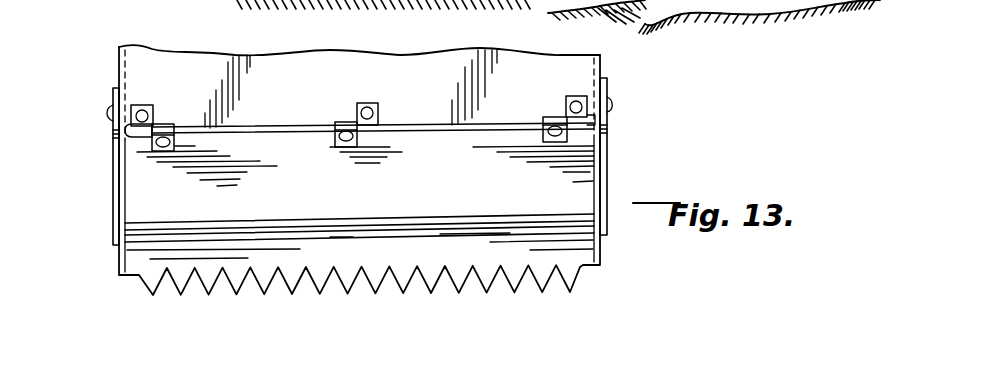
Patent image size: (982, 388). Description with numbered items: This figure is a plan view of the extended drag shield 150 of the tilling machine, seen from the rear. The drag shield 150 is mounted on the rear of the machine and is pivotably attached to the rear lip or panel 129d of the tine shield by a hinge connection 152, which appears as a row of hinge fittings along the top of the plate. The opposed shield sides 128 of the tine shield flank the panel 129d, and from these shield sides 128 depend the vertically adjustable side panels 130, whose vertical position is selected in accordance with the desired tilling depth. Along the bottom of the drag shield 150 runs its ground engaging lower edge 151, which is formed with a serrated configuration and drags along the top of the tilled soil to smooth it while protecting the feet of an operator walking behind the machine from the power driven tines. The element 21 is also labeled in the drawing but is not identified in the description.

The tree root ball 21 is at (154, 56).
The shield sides 128 is at (117, 68).
The rear lip or panel 129d is at (300, 94).
The side panels 130 is at (113, 212).
The drag shield 150 is at (430, 196).
The lower edge 151 is at (573, 280).
The hinge connection 152 is at (163, 124).